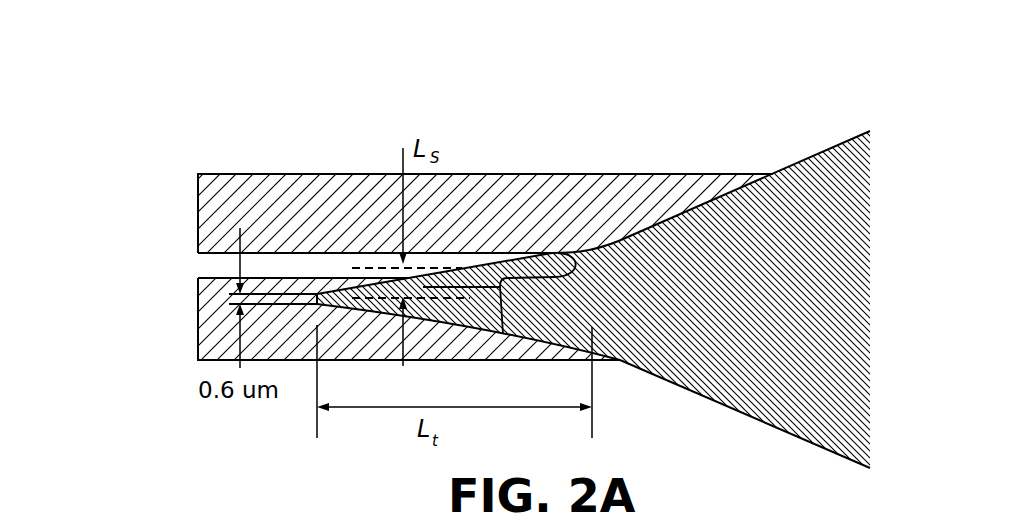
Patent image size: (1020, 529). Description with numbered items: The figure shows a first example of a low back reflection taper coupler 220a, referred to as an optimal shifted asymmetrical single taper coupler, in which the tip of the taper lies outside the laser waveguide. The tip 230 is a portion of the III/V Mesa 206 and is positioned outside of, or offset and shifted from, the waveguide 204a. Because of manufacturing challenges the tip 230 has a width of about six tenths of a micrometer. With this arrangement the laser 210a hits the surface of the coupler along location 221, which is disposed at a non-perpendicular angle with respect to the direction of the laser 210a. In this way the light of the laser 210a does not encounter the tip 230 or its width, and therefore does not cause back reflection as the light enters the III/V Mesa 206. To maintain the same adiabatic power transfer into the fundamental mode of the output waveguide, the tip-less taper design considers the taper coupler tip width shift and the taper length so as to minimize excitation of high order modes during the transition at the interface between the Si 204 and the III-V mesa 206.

The Si 204 is at (285, 193).
The waveguide 204a is at (207, 267).
The laser 210a is at (170, 267).
The low back reflection taper coupler 220a is at (530, 74).
The tip 230 is at (317, 293).
The III/V Mesa 206 is at (773, 205).
The location 221 is at (517, 338).